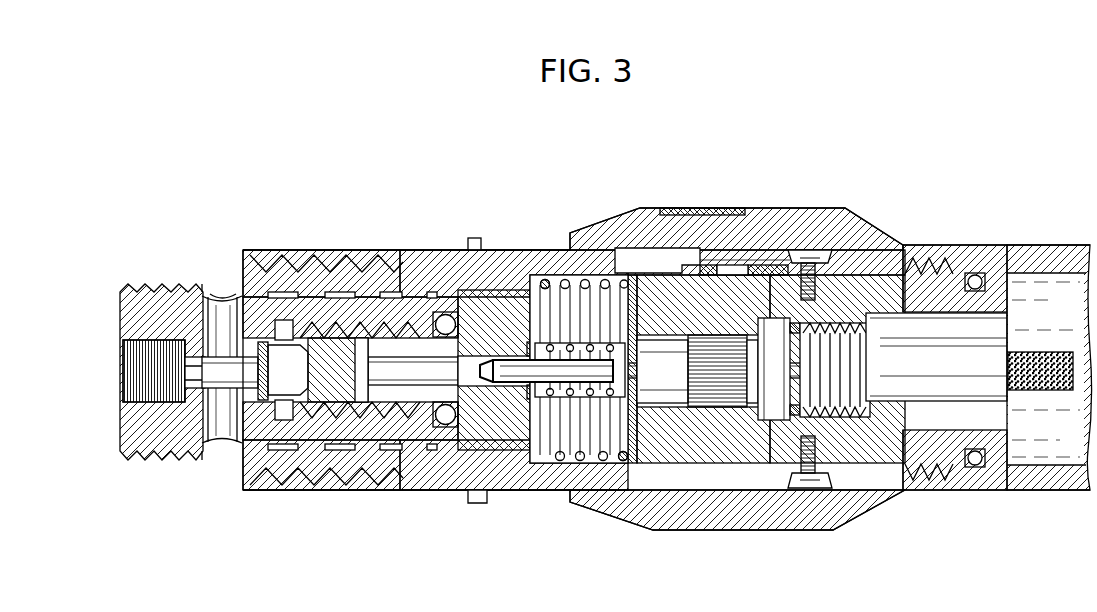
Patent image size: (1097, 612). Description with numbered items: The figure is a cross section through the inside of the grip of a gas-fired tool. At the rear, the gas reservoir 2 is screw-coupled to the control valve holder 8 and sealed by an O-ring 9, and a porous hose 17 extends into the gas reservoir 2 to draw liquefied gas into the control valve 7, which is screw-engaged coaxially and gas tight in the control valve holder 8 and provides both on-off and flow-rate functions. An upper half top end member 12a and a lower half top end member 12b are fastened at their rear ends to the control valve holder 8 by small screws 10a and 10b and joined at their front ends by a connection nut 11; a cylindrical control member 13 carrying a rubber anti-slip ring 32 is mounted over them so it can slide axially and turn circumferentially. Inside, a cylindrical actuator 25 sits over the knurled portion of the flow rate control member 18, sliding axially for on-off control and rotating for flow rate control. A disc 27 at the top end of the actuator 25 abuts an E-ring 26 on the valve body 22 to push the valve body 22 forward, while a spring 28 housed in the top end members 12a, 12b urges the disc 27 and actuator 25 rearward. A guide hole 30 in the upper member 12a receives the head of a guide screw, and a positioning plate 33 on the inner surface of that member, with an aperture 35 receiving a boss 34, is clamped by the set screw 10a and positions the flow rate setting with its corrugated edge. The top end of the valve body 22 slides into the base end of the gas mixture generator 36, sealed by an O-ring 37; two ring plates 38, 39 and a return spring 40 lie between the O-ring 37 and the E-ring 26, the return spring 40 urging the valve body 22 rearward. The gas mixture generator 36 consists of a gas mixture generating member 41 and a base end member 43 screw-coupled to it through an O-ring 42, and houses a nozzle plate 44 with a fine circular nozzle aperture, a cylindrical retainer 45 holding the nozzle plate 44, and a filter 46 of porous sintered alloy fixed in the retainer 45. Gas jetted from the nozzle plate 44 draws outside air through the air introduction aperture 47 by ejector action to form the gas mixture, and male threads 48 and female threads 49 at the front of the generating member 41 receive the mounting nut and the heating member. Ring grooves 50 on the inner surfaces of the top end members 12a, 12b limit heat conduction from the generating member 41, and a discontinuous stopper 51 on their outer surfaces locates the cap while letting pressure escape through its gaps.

The gas reservoir 2 is at (1048, 262).
The control valve 7 is at (882, 382).
The control valve holder 8 is at (932, 272).
The O-ring 9 is at (978, 273).
The small screw 10a is at (829, 248).
The small screw 10b is at (829, 490).
The connection nut 11 is at (286, 250).
The upper half top end member 12a is at (488, 252).
The lower half top end member 12b is at (420, 490).
The cylindrical control member 13 is at (822, 230).
The porous hose 17 is at (1052, 380).
The flow rate control member 18 is at (719, 340).
The valve body 22 is at (496, 358).
The cylindrical actuator 25 is at (666, 500).
The E-ring 26 is at (665, 500).
The disc 27 is at (637, 312).
The spring 28 is at (549, 276).
The guide hole 30 is at (612, 250).
The anti-slip ring 32 is at (674, 208).
The positioning plate 33 is at (771, 265).
The boss 34 is at (736, 266).
The aperture 35 is at (709, 266).
The gas mixture generator 36 is at (213, 264).
The O-ring 37 is at (527, 394).
The ring plate 38 is at (544, 279).
The ring plate 39 is at (620, 461).
The return spring 40 is at (546, 400).
The gas mixture generating member 41 is at (349, 300).
The O-ring 42 is at (446, 428).
The base end member 43 is at (500, 450).
The nozzle plate 44 is at (262, 342).
The cylindrical retainer 45 is at (300, 340).
The filter 46 is at (341, 405).
The air introduction aperture 47 is at (218, 440).
The male threads 48 is at (142, 460).
The female threads 49 is at (140, 372).
The ring grooves 50 is at (393, 292).
The stopper 51 is at (468, 242).